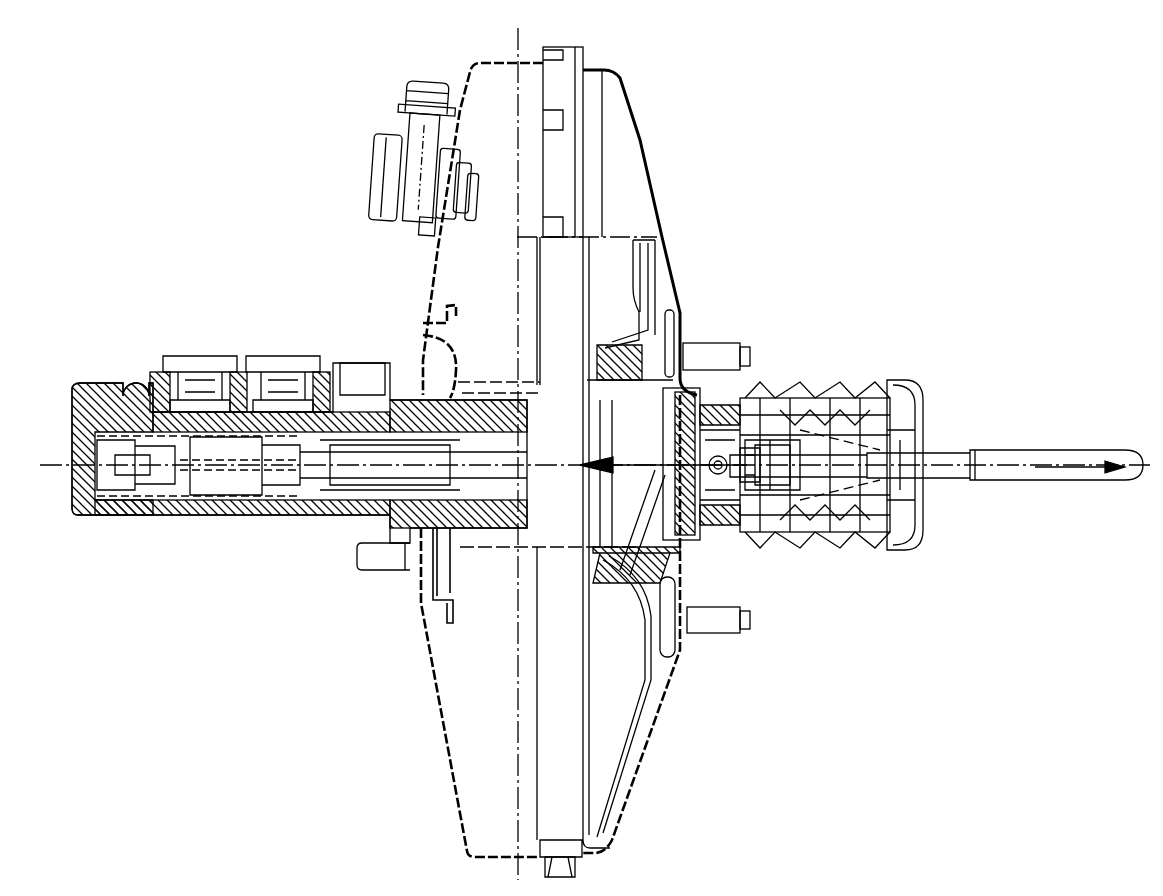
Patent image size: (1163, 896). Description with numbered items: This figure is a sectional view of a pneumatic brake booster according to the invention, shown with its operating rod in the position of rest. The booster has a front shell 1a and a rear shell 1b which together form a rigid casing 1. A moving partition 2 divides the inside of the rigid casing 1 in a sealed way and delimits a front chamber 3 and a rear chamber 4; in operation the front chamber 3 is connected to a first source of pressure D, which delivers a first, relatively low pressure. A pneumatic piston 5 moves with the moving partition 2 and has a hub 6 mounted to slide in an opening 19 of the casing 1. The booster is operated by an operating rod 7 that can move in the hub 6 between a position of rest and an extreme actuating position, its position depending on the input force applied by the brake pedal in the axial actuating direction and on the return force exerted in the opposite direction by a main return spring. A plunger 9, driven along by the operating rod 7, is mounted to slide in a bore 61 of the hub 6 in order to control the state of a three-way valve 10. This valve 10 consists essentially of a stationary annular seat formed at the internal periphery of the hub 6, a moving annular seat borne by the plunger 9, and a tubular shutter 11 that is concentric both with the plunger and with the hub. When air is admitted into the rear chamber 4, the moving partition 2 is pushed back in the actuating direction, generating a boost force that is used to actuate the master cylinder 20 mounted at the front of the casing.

The rigid casing 1 is at (682, 276).
The front shell 1a is at (427, 272).
The rear shell 1b is at (687, 320).
The moving partition 2 is at (682, 303).
The front chamber 3 is at (477, 250).
The rear chamber 4 is at (655, 270).
The pneumatic piston 5 is at (683, 566).
The hub 6 is at (847, 540).
The operating rod 7 is at (903, 540).
The plunger 9 is at (747, 547).
The three-way valve 10 is at (830, 387).
The tubular shutter 11 is at (890, 413).
The opening 19 is at (783, 380).
The master cylinder 20 is at (337, 360).
The bore 61 is at (763, 383).
The first source of pressure D is at (433, 107).